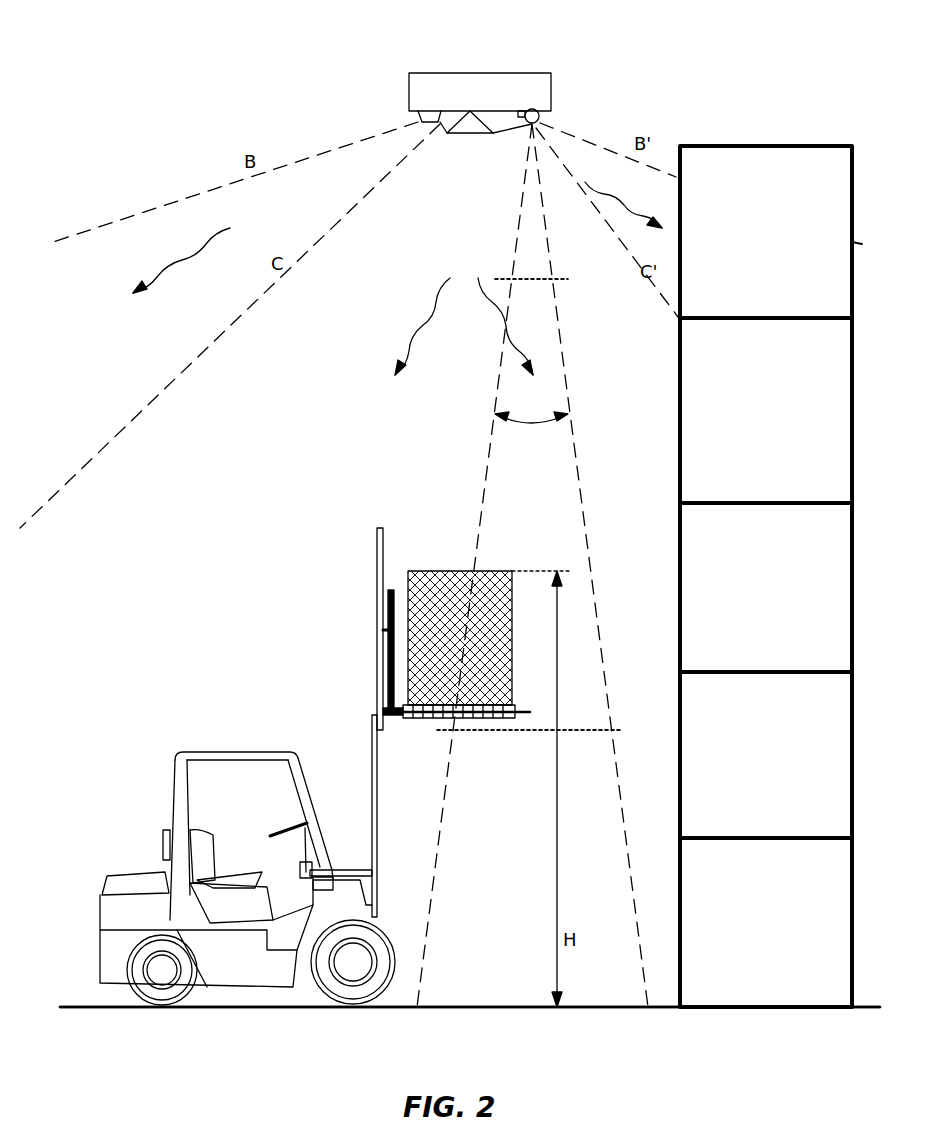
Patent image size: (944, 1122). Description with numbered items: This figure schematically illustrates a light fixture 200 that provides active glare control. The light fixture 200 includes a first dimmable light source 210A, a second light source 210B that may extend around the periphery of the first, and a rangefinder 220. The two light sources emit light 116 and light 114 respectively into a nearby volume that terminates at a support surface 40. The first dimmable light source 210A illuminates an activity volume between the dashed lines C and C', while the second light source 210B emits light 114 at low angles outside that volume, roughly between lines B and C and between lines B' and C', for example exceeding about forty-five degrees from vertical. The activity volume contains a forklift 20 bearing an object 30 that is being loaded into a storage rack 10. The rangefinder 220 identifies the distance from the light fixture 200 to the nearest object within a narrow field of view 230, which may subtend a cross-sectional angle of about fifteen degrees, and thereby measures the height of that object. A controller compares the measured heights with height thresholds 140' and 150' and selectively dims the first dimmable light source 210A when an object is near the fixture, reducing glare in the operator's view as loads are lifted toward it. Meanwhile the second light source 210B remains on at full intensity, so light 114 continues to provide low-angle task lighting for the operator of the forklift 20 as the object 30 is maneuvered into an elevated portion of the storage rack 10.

The storage rack 10 is at (775, 146).
The forklift 20 is at (257, 755).
The object 30 is at (435, 571).
The support surface 40 is at (458, 1007).
The light 114 is at (397, 230).
The light 116 is at (464, 316).
The height threshold 140' is at (530, 764).
The height threshold 150' is at (553, 301).
The light fixture 200 is at (409, 92).
The first dimmable light source 210A is at (472, 125).
The second light source 210B is at (497, 122).
The rangefinder 220 is at (547, 115).
The field of view 230 is at (540, 427).